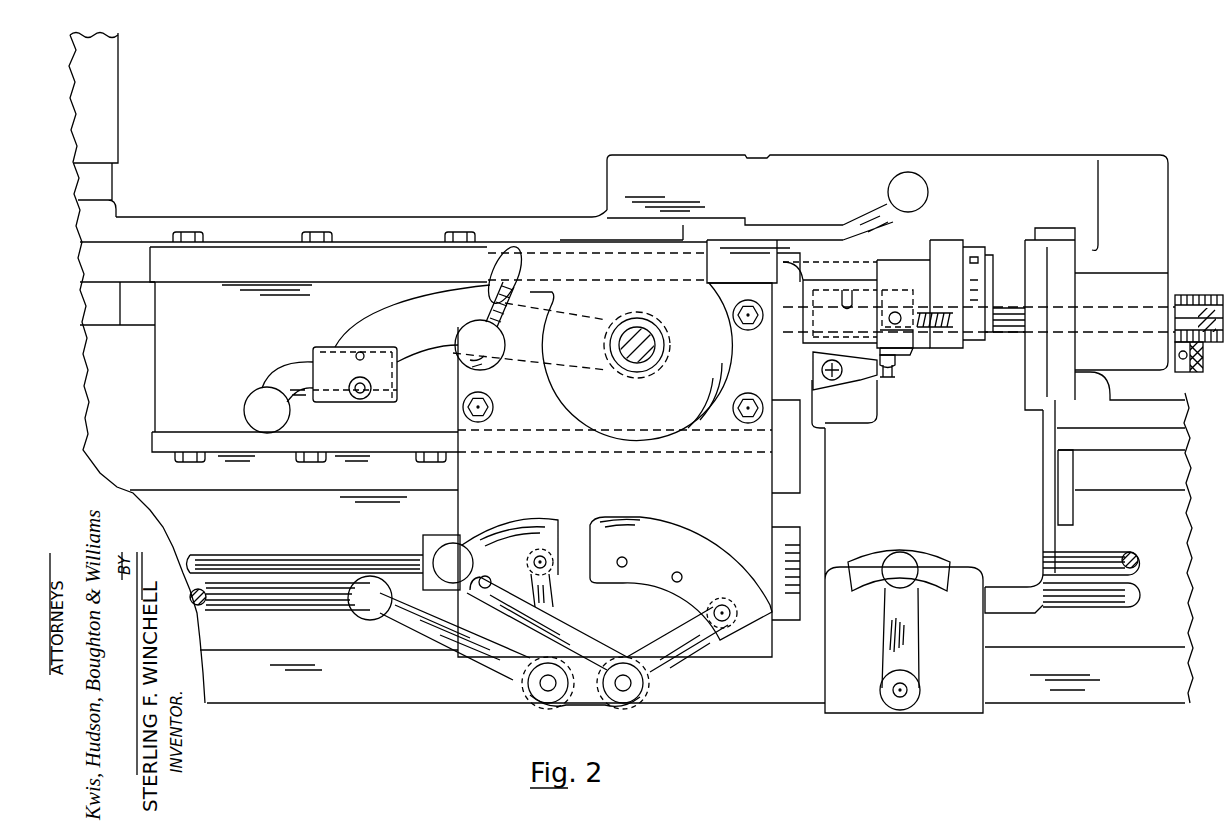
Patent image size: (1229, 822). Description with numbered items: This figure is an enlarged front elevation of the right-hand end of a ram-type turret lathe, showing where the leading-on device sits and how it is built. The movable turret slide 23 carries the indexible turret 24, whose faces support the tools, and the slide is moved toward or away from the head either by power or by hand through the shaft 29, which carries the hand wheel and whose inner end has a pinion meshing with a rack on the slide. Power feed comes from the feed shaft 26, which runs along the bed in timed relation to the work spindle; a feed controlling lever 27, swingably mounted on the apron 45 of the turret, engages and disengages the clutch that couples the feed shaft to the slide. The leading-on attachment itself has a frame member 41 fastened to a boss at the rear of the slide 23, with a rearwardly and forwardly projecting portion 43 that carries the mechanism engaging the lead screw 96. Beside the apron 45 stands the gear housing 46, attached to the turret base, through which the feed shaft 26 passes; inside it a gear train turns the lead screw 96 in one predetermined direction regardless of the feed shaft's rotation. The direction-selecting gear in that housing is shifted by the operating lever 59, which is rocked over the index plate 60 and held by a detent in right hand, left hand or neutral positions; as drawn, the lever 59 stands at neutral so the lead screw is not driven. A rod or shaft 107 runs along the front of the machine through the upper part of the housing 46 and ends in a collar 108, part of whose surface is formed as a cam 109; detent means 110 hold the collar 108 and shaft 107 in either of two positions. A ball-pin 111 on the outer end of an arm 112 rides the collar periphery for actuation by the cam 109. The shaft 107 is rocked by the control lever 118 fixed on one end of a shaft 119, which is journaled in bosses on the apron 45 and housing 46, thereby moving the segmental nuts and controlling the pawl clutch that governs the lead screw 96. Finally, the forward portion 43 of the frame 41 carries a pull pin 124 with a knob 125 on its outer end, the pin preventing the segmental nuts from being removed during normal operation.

The turret slide 23 is at (378, 222).
The indexible turret 24 is at (112, 114).
The feed shaft 26 is at (284, 567).
The feed controlling lever 27 is at (381, 323).
The shaft 29 is at (645, 335).
The frame member 41 is at (735, 172).
The rearwardly and forwardly projecting portion 43 is at (1113, 248).
The apron 45 is at (770, 648).
The gear housing 46 is at (1038, 607).
The operating lever 59 is at (912, 660).
The index plate 60 is at (942, 573).
The lead screw 96 is at (1218, 298).
The rod or shaft 107 is at (1153, 320).
The collar 108 is at (893, 297).
The cam 109 is at (907, 350).
The detent means 110 is at (930, 333).
The ball-pin 111 is at (897, 368).
The arm 112 is at (885, 372).
The control lever 118 is at (485, 360).
The shaft 119 is at (762, 258).
The pull pin 124 is at (1183, 366).
The knob 125 is at (1200, 376).